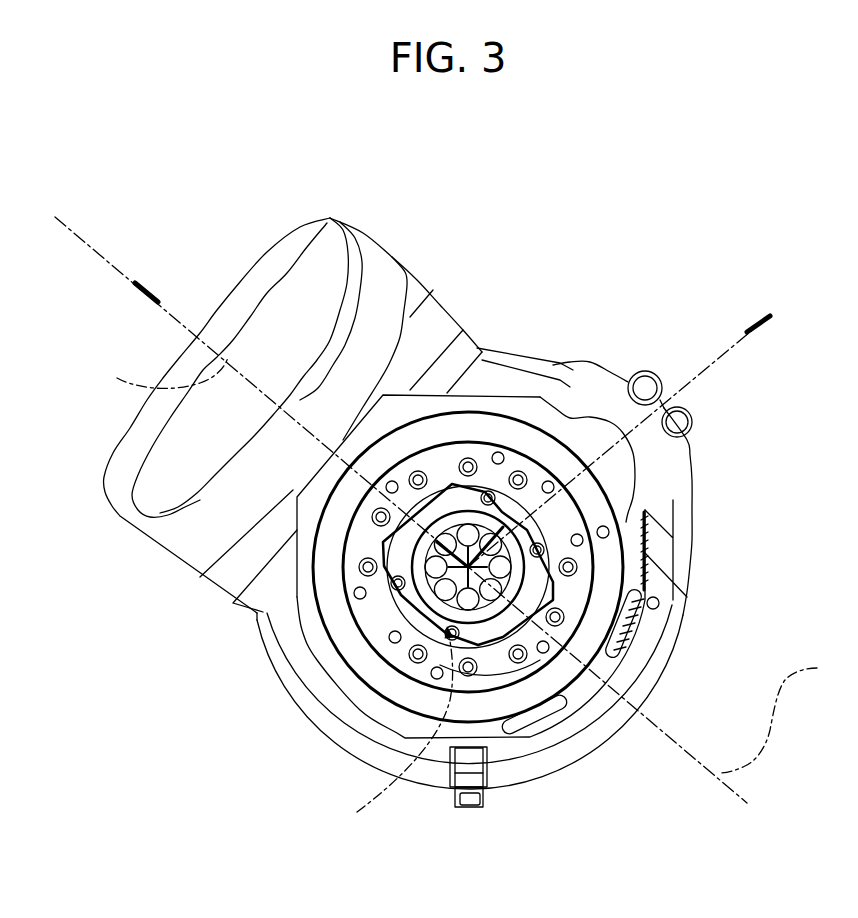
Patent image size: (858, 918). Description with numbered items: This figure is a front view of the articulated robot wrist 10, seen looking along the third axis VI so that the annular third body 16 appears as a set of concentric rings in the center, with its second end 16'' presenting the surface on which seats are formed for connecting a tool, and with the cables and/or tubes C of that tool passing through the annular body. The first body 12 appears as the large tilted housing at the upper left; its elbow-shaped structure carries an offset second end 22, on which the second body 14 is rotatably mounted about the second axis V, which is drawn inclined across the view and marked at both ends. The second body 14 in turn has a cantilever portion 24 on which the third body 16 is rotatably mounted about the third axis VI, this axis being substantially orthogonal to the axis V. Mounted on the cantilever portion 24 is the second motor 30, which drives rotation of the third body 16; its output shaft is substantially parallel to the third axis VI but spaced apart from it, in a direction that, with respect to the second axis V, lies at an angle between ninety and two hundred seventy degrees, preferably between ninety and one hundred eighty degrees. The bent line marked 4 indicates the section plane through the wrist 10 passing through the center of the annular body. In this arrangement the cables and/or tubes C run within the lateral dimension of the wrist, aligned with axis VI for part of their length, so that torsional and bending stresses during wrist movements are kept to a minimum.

The articulated robot wrist 10 is at (202, 190).
The first body 12 is at (363, 224).
The second body 14 is at (640, 550).
The third body 16 is at (533, 580).
The second end of the third body 16'' is at (537, 742).
The second end (offset portion) of the first body 22 is at (280, 515).
The cantilever portion of the second body 24 is at (637, 496).
The second motor 30 is at (607, 397).
The section line 4- 4 is at (739, 297).
The second axis V is at (463, 565).
The third axis VI is at (388, 727).
The cables and/or tubes C is at (433, 613).